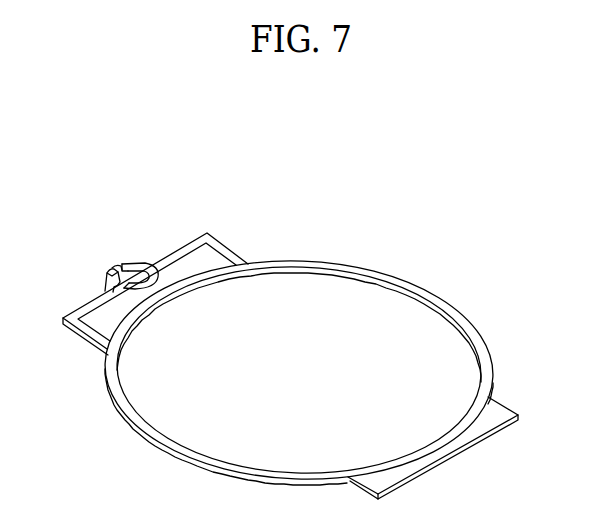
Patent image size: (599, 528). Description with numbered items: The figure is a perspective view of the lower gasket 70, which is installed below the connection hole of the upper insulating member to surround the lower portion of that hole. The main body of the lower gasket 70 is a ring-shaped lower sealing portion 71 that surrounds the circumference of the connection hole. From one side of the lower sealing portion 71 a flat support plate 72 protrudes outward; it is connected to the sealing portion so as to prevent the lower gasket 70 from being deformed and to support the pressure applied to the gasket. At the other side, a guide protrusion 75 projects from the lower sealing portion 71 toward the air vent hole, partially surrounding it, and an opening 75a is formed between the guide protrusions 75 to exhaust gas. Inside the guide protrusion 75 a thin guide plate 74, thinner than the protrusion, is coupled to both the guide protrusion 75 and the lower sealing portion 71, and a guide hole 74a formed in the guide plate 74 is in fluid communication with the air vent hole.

The lower gasket 70 is at (282, 333).
The lower sealing portion 71 is at (428, 290).
The support plate 72 is at (473, 430).
The guide plate 74 is at (107, 320).
The guide hole 74a is at (135, 272).
The guide protrusion 75 is at (113, 278).
The opening 75a is at (121, 266).